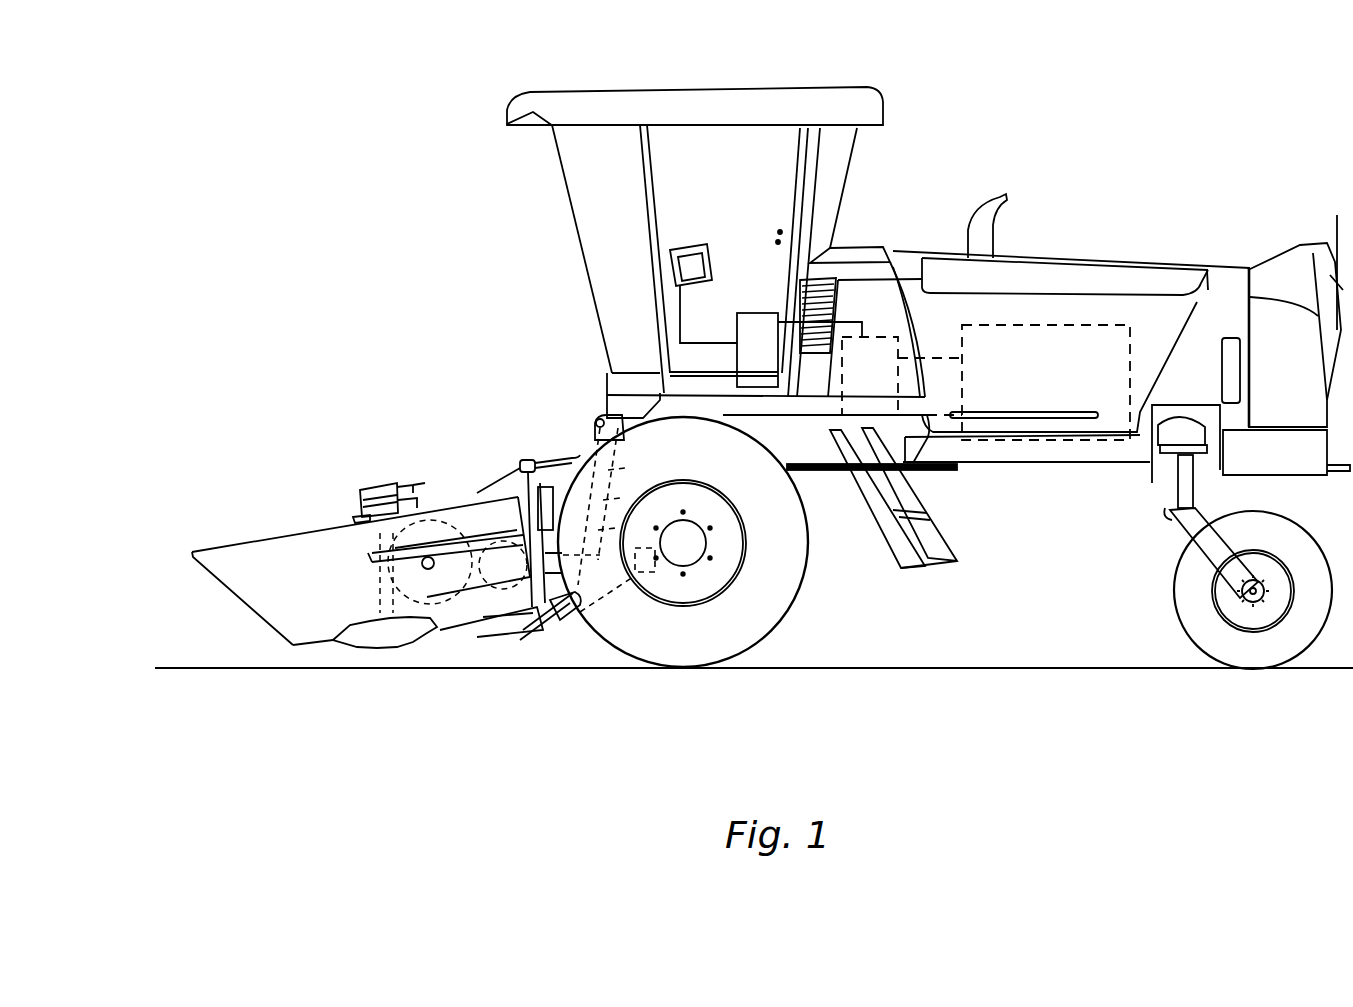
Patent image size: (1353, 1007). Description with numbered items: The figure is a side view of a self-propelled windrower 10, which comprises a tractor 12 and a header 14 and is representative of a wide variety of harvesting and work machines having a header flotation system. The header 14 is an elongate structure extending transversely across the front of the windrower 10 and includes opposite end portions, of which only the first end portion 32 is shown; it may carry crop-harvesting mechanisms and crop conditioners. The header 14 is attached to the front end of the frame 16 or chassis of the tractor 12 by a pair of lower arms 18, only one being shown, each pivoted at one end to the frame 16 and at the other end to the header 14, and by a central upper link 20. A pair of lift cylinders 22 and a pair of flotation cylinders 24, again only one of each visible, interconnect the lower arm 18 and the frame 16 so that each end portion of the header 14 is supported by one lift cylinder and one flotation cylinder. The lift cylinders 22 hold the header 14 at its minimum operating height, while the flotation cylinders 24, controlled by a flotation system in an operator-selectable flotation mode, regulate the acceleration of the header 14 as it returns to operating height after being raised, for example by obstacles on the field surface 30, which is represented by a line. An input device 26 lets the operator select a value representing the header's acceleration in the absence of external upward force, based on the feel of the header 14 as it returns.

The self-propelled windrower 10 is at (769, 327).
The tractor 12 is at (1184, 251).
The header 14 is at (360, 552).
The frame 16 is at (583, 418).
The lower arm 18 is at (520, 632).
The central upper link 20 is at (518, 459).
The lift cylinder 22 is at (632, 490).
The flotation cylinder 24 is at (588, 465).
The input device 26 is at (703, 248).
The surface 30 is at (1093, 676).
The first end portion 32 is at (253, 621).